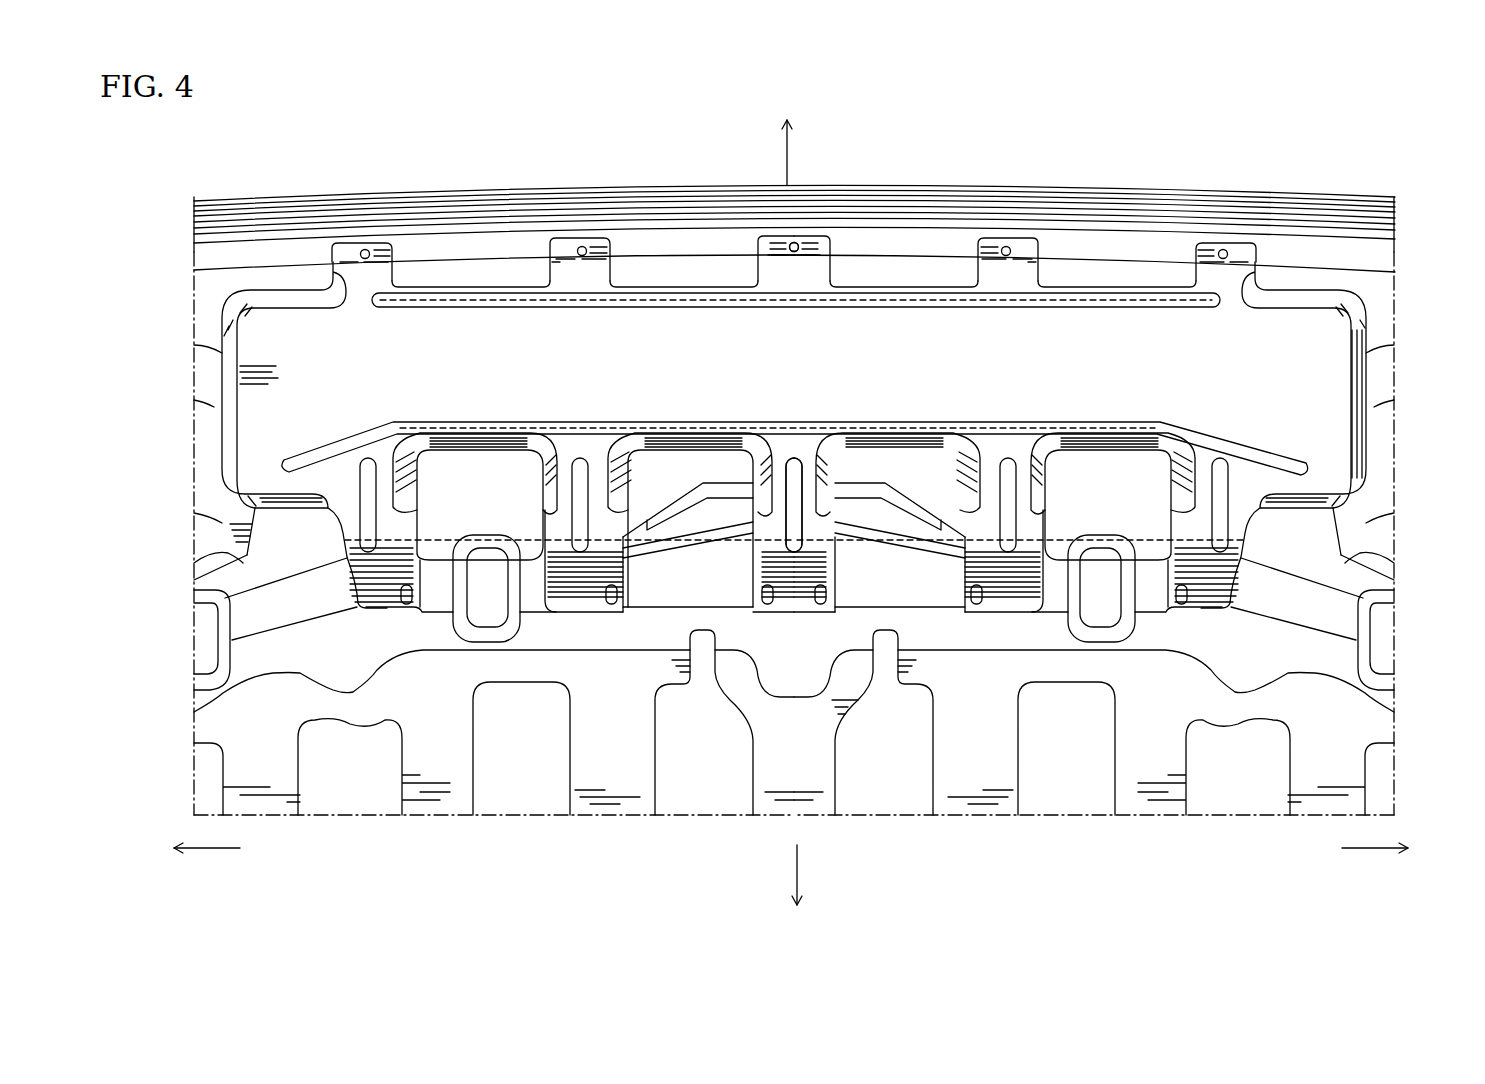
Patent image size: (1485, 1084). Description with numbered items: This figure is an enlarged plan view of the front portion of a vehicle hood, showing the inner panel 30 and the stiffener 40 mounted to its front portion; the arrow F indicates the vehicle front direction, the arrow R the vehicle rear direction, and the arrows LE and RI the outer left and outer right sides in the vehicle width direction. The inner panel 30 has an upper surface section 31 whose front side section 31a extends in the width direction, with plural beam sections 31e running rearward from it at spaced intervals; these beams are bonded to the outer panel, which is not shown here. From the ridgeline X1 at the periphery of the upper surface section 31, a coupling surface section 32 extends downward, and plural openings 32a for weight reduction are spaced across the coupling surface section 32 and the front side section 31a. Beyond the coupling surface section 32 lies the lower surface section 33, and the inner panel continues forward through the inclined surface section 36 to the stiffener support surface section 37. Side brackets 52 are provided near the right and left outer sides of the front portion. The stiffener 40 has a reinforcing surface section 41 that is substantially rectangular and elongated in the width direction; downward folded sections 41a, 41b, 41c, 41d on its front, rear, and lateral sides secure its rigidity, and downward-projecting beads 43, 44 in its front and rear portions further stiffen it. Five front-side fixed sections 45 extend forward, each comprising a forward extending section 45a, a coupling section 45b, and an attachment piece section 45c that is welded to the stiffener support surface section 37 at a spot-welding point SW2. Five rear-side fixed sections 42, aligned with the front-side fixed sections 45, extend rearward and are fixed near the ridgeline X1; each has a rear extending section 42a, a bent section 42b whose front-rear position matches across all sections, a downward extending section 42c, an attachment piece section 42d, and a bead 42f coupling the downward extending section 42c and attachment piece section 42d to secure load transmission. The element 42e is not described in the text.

The inner panel 30 is at (903, 178).
The upper surface section 31 is at (648, 630).
The front side section 31a is at (933, 620).
The beam sections 31e is at (440, 758).
The coupling surface section 32 is at (730, 560).
The openings 32a is at (493, 632).
The lower surface section 33 is at (666, 452).
The inclined surface section 36 is at (687, 278).
The stiffener support surface section 37 is at (627, 246).
The stiffener 40 is at (1093, 288).
The reinforcing surface section 41 is at (816, 349).
The folded section 41a is at (268, 298).
The folded section 41b is at (452, 440).
The folded section 41c is at (230, 430).
The folded section 41d is at (1366, 353).
The rear-side fixed section 42 is at (536, 519).
The rear extending section 42a is at (563, 460).
The bent section 42b is at (540, 543).
The downward extending section 42c is at (550, 592).
The attachment piece section 42d is at (407, 608).
The rib 42e is at (365, 480).
The bead 42f is at (406, 606).
The bead 43 is at (912, 299).
The bead 44 is at (975, 422).
The front-side fixed section 45 is at (398, 250).
The forward extending section 45a is at (572, 283).
The coupling section 45b is at (600, 264).
The attachment piece section 45c is at (530, 245).
The side bracket 52 is at (216, 498).
The spot-welding point SW2 is at (363, 246).
The ridgeline X1 is at (872, 618).
The arrow F is at (787, 138).
The arrow R is at (797, 892).
The arrow LE is at (190, 850).
The arrow RI is at (1390, 850).